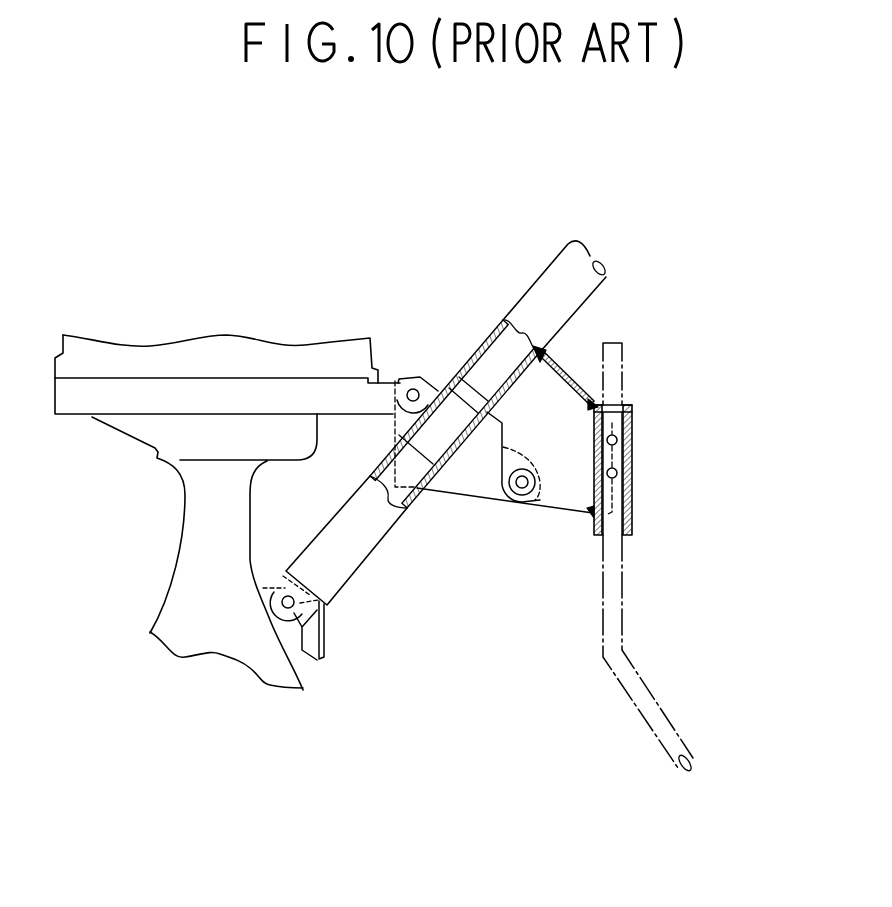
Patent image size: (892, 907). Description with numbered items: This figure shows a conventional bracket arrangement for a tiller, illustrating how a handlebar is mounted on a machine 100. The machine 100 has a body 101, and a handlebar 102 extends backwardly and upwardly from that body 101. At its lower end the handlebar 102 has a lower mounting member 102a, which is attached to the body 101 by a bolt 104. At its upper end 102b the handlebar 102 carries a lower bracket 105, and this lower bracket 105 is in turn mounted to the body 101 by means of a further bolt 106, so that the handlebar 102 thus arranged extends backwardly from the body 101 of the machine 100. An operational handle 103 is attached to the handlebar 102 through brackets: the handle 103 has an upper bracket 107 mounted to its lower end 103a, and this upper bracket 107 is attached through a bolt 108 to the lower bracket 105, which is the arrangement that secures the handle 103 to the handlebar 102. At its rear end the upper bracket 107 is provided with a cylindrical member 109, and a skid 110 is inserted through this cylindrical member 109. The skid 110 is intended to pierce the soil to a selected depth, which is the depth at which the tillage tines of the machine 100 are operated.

The machine 100 is at (185, 250).
The body 101 is at (178, 516).
The handlebar 102 is at (360, 567).
The lower mounting member 102a is at (268, 607).
The upper end 102b is at (397, 430).
The operational handle 103 is at (548, 268).
The lower end 103a is at (520, 383).
The bolt 104 is at (290, 612).
The lower bracket 105 is at (478, 487).
The bolt 106 is at (418, 378).
The upper bracket 107 is at (580, 420).
The bolt 108 is at (522, 495).
The cylindrical member 109 is at (632, 490).
The skid 110 is at (622, 627).